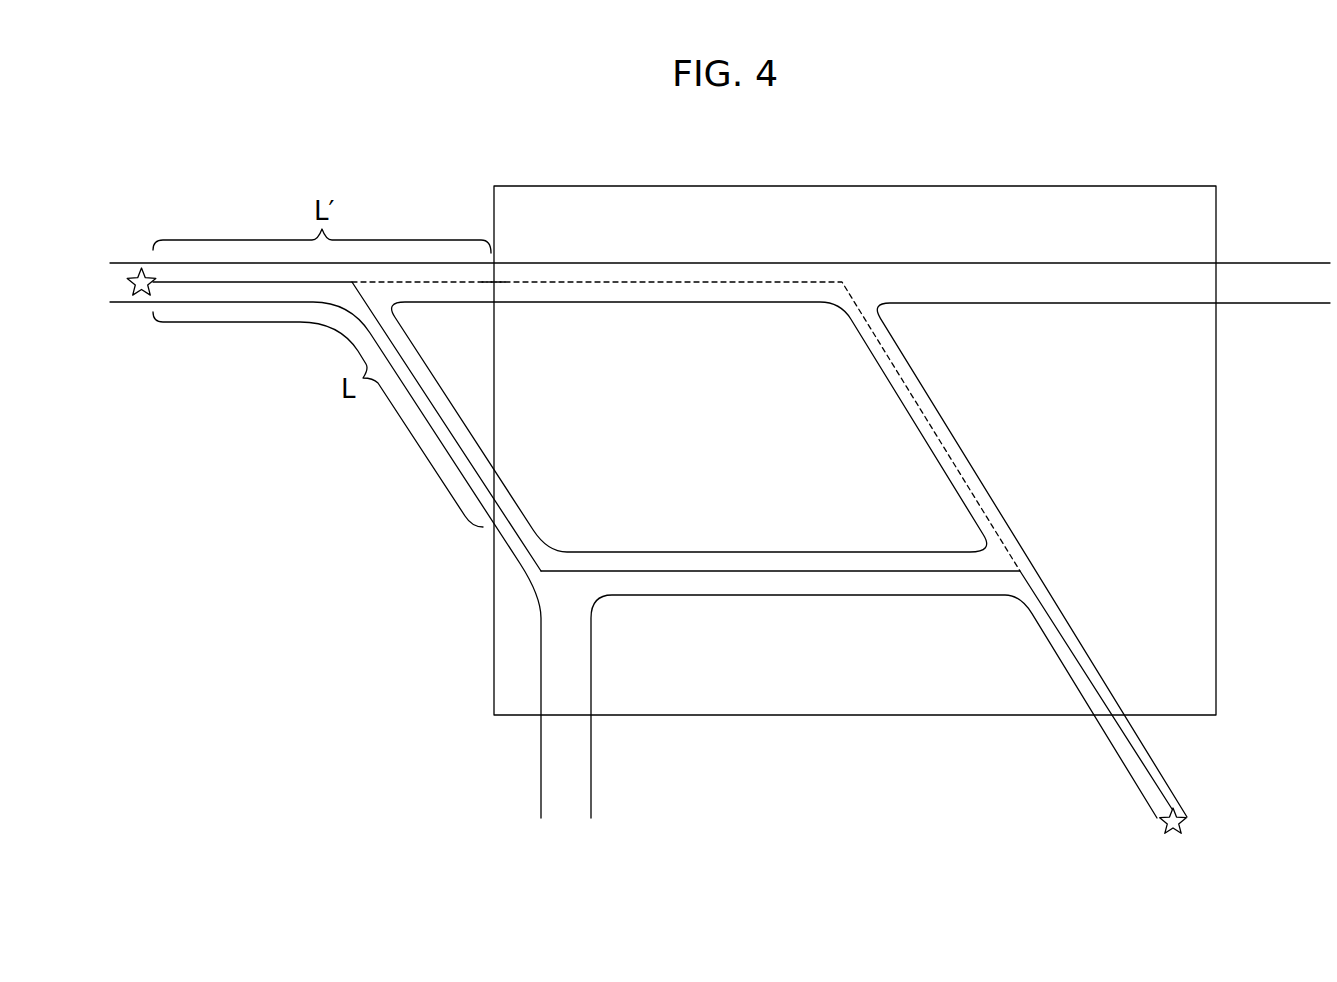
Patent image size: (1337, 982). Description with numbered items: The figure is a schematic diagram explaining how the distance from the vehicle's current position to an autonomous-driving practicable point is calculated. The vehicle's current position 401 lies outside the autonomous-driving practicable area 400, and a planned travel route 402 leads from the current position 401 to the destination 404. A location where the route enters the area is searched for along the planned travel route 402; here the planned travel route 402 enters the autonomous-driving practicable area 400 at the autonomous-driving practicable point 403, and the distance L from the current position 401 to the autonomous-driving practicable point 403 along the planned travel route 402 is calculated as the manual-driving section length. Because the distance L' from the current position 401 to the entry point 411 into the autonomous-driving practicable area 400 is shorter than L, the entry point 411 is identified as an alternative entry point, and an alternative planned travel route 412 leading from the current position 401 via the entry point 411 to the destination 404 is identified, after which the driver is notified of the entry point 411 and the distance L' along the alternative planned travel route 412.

The autonomous-driving practicable area 400 is at (1217, 647).
The current position 401 is at (140, 297).
The planned travel route 402 is at (415, 377).
The autonomous-driving practicable point 403 is at (493, 496).
The destination 404 is at (1181, 829).
The entry point 411 is at (497, 283).
The alternative planned travel route 412 is at (588, 282).